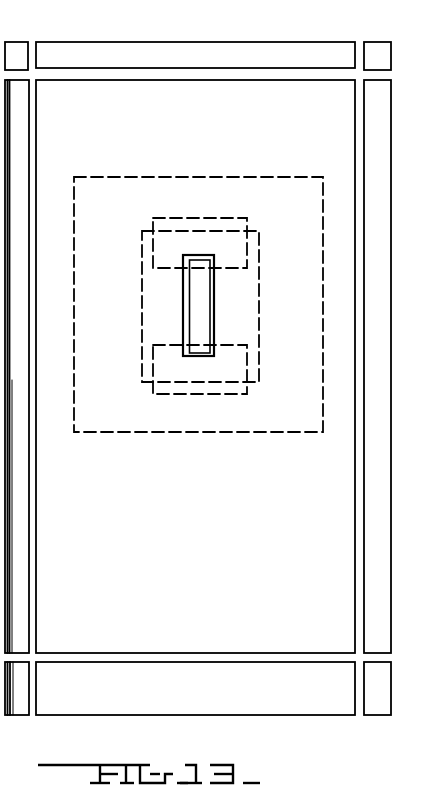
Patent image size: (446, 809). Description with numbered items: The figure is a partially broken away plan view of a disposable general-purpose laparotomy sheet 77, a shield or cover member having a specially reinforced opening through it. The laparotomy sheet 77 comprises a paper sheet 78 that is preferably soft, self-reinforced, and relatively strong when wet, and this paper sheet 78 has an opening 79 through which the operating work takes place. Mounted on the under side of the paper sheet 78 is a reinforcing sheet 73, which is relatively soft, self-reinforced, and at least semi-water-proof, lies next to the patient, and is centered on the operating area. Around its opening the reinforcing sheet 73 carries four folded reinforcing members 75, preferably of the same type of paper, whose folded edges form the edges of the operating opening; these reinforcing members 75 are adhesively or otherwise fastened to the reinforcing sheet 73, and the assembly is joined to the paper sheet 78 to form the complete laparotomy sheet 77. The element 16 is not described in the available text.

The laparotomy sheet 77 is at (284, 41).
The paper sheet 78 is at (377, 120).
The reinforcing sheet 73 is at (147, 176).
The folded reinforcing members 75 is at (186, 230).
The outer frame of insert 16 is at (214, 306).
The opening 79 is at (183, 307).